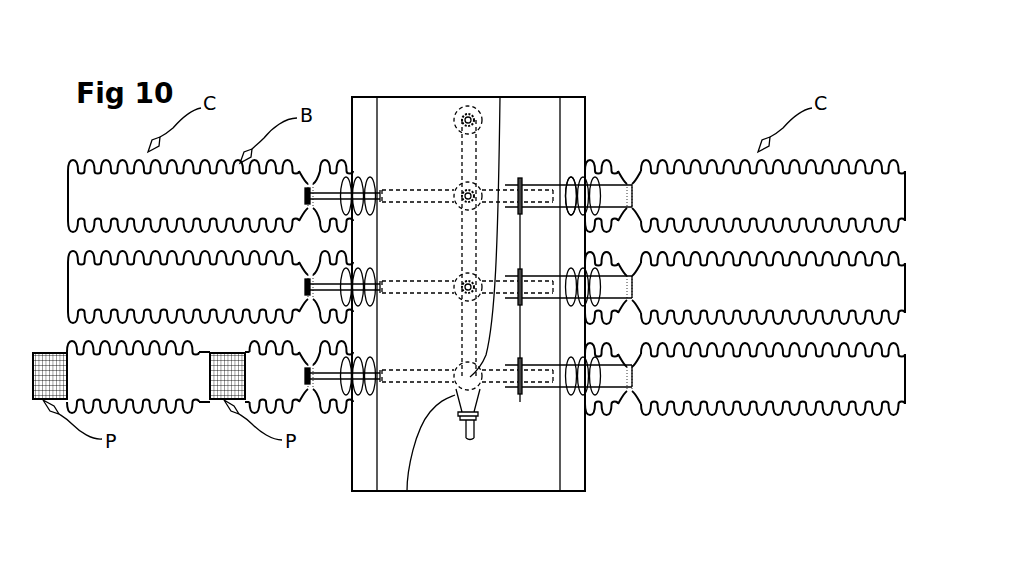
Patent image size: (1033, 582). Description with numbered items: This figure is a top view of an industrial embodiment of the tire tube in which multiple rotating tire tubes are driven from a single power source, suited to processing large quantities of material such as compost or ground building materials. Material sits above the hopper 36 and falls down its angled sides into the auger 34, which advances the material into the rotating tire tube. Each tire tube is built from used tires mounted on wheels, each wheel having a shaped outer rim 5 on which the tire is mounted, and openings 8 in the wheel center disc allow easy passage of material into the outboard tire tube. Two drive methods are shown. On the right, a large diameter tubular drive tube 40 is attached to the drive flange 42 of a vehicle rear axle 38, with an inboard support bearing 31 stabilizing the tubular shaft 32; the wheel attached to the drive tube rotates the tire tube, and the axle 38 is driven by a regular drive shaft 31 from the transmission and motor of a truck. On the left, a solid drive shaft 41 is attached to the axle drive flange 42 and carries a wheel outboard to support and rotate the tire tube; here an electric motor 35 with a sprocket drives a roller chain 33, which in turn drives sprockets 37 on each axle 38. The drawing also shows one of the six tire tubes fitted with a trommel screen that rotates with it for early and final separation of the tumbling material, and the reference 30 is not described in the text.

The rim 5 is at (633, 164).
The openings 8 is at (634, 283).
The pin shaft 30 is at (522, 400).
The drive shaft 31 is at (472, 438).
The tubular shaft 32 is at (561, 440).
The roller chain 33 is at (545, 186).
The auger 34 is at (523, 240).
The electric motor 35 is at (480, 108).
The hopper 36 is at (428, 97).
The sprocket 37 is at (478, 184).
The vehicle rear axle 38 is at (402, 185).
The tubular drive tube 40 is at (574, 174).
The solid drive shaft 41 is at (320, 157).
The drive flange 42 is at (378, 97).